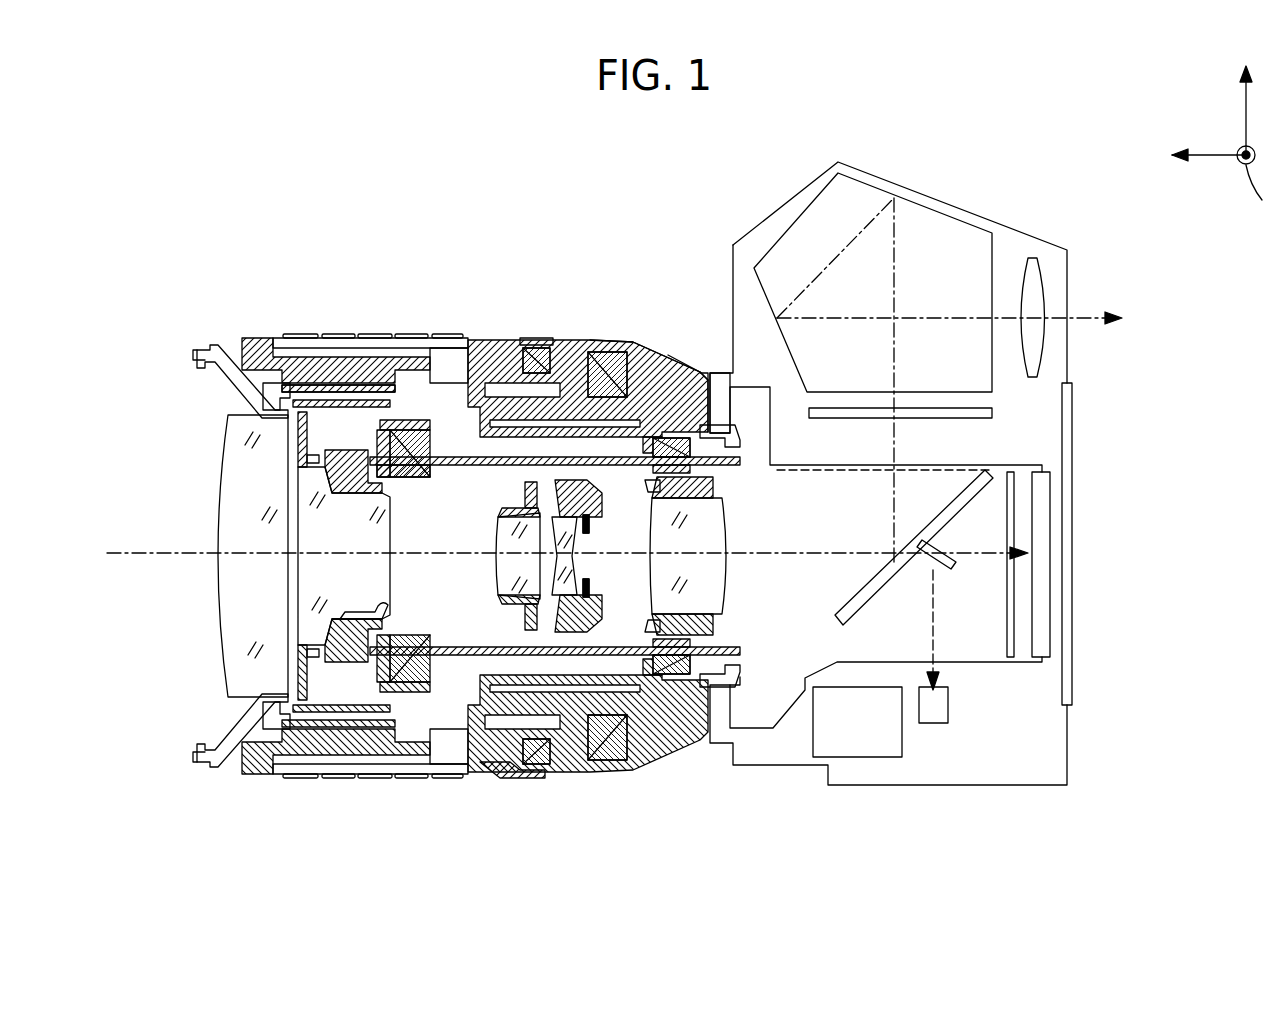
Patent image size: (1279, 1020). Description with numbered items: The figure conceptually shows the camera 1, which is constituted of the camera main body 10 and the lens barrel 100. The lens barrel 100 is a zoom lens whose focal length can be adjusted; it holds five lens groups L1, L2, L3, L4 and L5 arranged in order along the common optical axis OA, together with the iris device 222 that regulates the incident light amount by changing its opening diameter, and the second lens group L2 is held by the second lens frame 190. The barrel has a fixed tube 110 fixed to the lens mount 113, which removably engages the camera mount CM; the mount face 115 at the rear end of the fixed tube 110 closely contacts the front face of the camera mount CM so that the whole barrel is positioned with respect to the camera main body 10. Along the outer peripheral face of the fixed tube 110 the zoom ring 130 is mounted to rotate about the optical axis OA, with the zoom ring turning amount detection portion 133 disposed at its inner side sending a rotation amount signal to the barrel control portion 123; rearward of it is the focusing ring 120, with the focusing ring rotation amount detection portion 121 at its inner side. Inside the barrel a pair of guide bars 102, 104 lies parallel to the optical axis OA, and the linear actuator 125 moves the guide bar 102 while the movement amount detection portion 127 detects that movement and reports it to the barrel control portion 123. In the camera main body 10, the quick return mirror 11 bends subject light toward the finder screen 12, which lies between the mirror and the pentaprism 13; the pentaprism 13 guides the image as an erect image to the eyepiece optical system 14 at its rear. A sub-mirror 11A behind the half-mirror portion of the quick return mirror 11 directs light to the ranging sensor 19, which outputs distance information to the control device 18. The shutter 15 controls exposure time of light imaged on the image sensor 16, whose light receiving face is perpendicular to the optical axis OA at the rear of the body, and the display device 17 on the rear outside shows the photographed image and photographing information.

The camera 1 is at (538, 184).
The lens barrel 100 is at (343, 242).
The camera main body 10 is at (722, 212).
The pentaprism 13 is at (948, 226).
The eyepiece optical system 14 is at (1050, 293).
The finder screen 12 is at (992, 412).
The quick return mirror 11 is at (846, 600).
The sub-mirror 11A is at (938, 568).
The shutter 15 is at (1015, 502).
The image sensor 16 is at (1052, 545).
The display device 17 is at (1073, 598).
The control device 18 is at (856, 758).
The ranging sensor 19 is at (936, 724).
The zoom ring 130 is at (445, 334).
The zoom ring turning amount detection portion 133 is at (477, 777).
The focusing ring 120 is at (528, 338).
The focusing ring rotation amount detection portion 121 is at (573, 343).
The barrel control portion 123 is at (636, 343).
The fixed tube 110 is at (676, 352).
The mount face 115 is at (705, 375).
The lens mount 113 is at (722, 372).
The camera mount CM is at (735, 440).
The guide bar 102 is at (740, 462).
The guide bar 104 is at (740, 652).
The linear actuator 125 is at (420, 470).
The movement amount detection portion 127 is at (695, 472).
The second lens frame 190 is at (382, 612).
The iris device 222 is at (590, 530).
The optical axis OA is at (128, 555).
The first lens group L1 is at (218, 606).
The second lens group L2 is at (388, 583).
The third lens group L3 is at (498, 545).
The fourth lens group L4 is at (572, 580).
The fifth lens group L5 is at (724, 582).